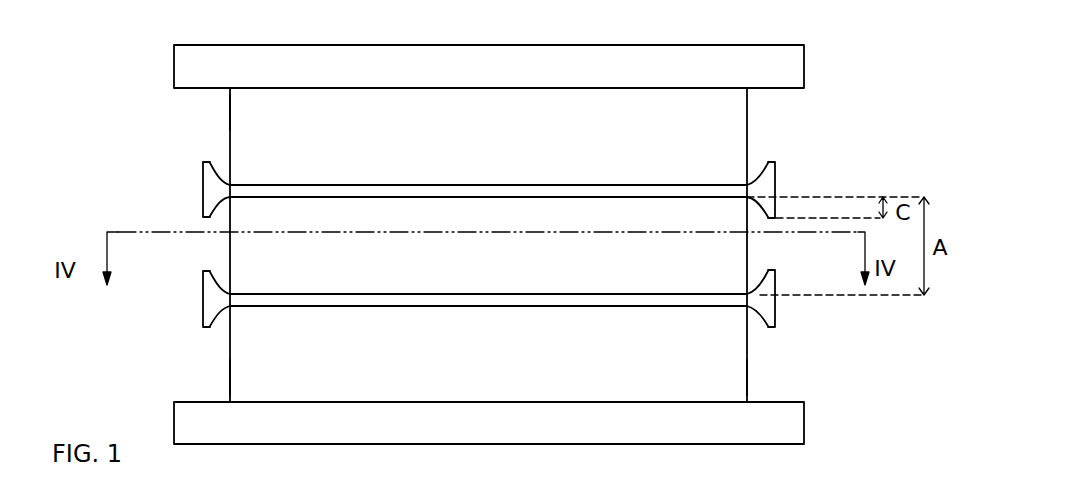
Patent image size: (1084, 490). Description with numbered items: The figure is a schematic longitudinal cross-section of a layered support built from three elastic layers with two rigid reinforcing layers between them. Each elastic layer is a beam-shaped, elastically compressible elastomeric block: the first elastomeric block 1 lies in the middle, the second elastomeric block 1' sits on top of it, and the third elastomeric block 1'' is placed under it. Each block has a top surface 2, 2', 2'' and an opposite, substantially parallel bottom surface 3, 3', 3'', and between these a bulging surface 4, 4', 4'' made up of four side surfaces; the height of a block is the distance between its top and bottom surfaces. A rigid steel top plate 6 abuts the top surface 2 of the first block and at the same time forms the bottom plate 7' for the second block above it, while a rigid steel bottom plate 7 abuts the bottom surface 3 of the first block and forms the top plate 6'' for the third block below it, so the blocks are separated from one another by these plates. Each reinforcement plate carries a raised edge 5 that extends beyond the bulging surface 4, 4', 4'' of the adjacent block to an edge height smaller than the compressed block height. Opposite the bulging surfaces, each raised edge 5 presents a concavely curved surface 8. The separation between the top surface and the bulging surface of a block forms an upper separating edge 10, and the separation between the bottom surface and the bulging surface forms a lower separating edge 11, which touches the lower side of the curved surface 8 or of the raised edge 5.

The first elastomeric block 1 is at (488, 175).
The second elastomeric block 1' is at (789, 229).
The third elastomeric block 1'' is at (781, 387).
The top surface 2 is at (441, 159).
The top surface 2' is at (489, 45).
The top surface 2'' is at (488, 282).
The bottom surface 3 is at (236, 331).
The bottom surface 3' is at (336, 229).
The bottom surface 3'' is at (489, 439).
The bulging surface 4 is at (183, 245).
The bulging surface 4' is at (166, 100).
The bulging surface 4'' is at (169, 392).
The raised edge 5 is at (201, 168).
The top plate 6 is at (348, 146).
The top plate 6'' is at (293, 392).
The bottom plate 7 is at (277, 394).
The bottom plate 7' is at (331, 146).
The concavely curved surface 8 is at (215, 206).
The upper separating edge 10 is at (747, 88).
The lower separating edge 11 is at (747, 183).